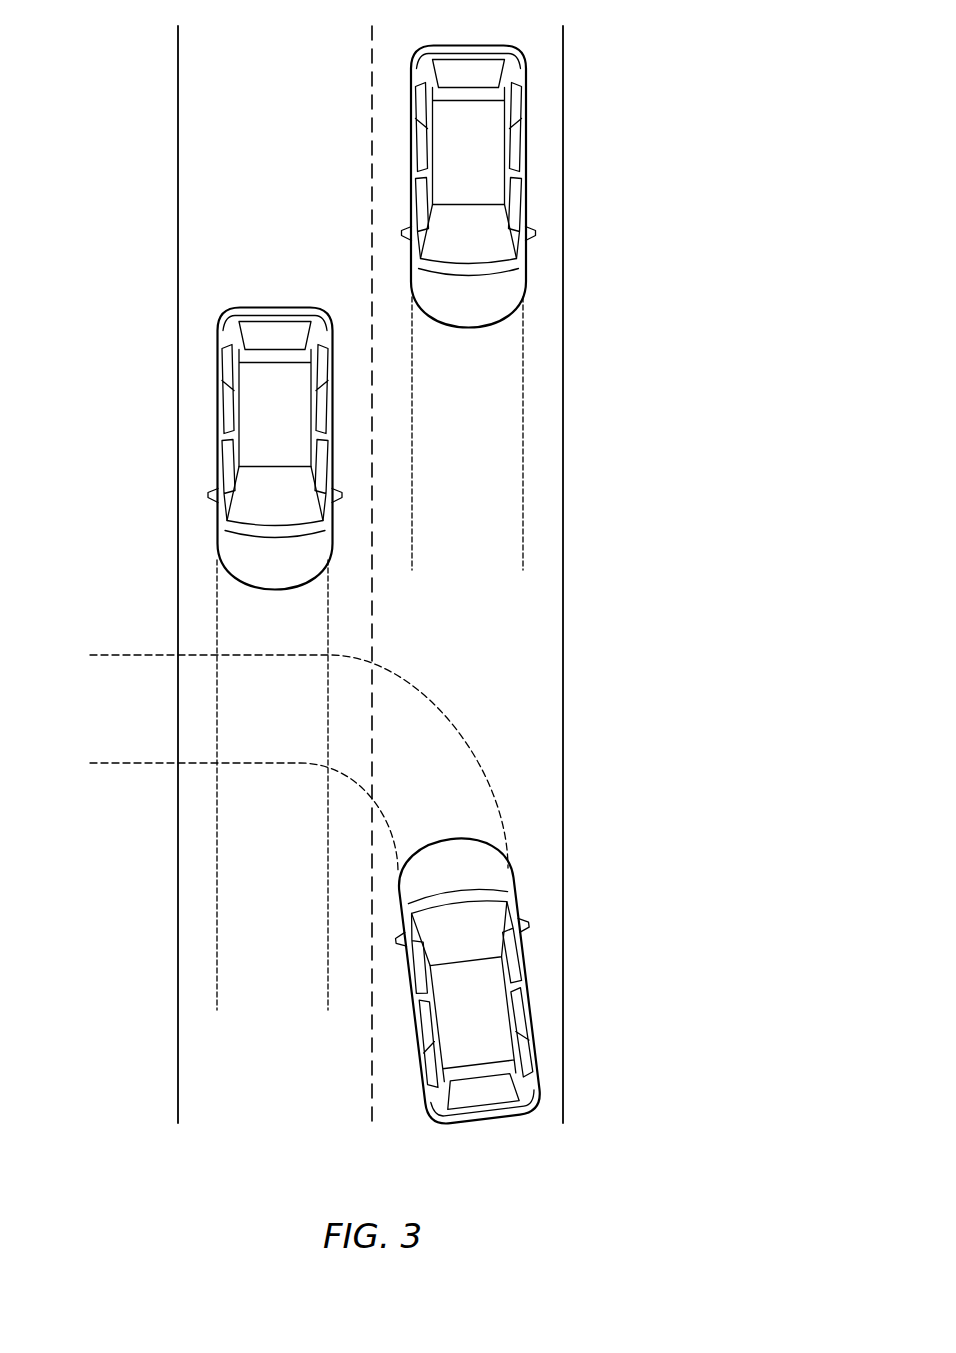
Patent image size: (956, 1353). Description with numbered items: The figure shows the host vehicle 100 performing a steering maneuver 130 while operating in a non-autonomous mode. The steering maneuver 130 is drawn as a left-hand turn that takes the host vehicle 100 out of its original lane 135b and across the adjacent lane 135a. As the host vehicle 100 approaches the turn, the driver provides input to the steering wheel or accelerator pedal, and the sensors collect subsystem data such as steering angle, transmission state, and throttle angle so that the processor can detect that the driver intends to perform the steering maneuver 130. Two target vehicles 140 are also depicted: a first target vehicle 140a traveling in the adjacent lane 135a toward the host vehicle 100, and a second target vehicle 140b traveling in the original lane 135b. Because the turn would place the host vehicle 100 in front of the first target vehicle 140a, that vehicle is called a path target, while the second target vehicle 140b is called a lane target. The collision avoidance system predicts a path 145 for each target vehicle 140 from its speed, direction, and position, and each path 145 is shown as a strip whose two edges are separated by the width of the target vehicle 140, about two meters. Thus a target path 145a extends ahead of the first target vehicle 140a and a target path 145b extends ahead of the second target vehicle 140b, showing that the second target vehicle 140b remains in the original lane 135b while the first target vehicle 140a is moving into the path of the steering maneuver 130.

The host vehicle 100 is at (513, 888).
The steering maneuver 130 is at (470, 748).
The adjacent lane 135a is at (222, 118).
The original lane 135b is at (541, 312).
The target vehicle 140 is at (392, 125).
The first target vehicle 140a is at (217, 455).
The second target vehicle 140b is at (525, 118).
The path 145 is at (523, 507).
The target path 145a is at (217, 625).
The target path 145b is at (523, 403).